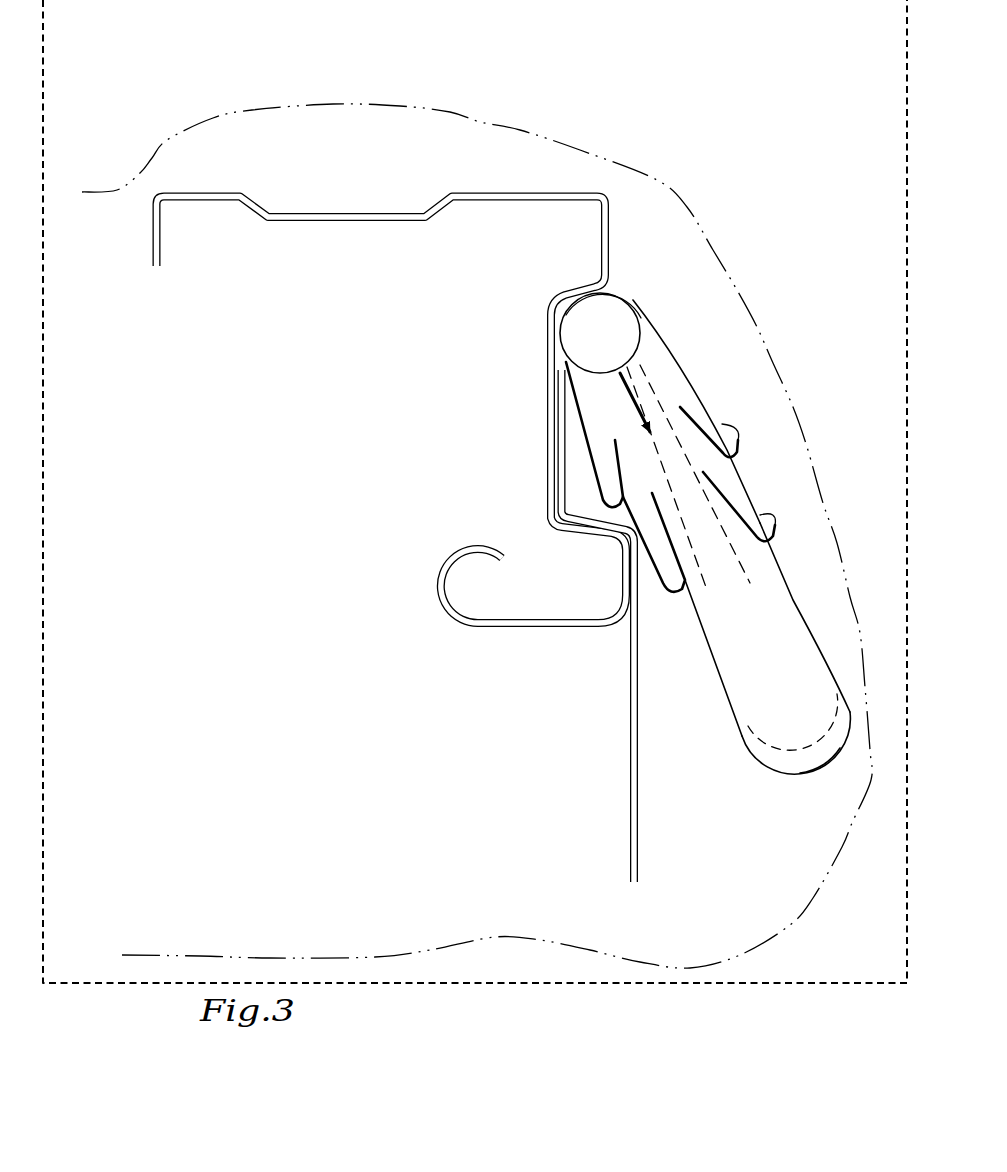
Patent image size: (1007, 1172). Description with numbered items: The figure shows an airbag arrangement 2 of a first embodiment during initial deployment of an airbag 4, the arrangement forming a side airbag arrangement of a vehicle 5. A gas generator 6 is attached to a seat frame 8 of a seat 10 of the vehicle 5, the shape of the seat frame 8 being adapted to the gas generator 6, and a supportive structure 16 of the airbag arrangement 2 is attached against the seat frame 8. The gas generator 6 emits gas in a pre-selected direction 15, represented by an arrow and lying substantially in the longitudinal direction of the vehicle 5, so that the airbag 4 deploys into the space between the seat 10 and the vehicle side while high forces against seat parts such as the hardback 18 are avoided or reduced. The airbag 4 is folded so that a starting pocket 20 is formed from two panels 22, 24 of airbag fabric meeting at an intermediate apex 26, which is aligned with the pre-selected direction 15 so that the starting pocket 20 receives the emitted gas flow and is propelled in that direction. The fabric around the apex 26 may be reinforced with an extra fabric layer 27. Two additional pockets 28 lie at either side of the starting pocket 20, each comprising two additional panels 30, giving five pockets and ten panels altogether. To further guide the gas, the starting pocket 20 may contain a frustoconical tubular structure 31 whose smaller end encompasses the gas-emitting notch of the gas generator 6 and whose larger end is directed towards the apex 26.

The airbag arrangement 2 is at (690, 302).
The airbag 4 is at (656, 390).
The vehicle 5 is at (101, 66).
The gas generator 6 is at (589, 347).
The seat frame 8 is at (366, 212).
The seat 10 is at (677, 104).
The pre-selected direction 15 is at (640, 413).
The supportive structure 16 is at (630, 733).
The hardback 18 is at (477, 193).
The starting pocket 20 is at (760, 676).
The panel 22 is at (710, 656).
The panel 24 is at (800, 612).
The intermediate apex 26 is at (833, 770).
The extra fabric layer 27 is at (775, 756).
The additional pocket 28 is at (727, 433).
The additional panel 30 is at (740, 392).
The tubular structure 31 is at (742, 552).